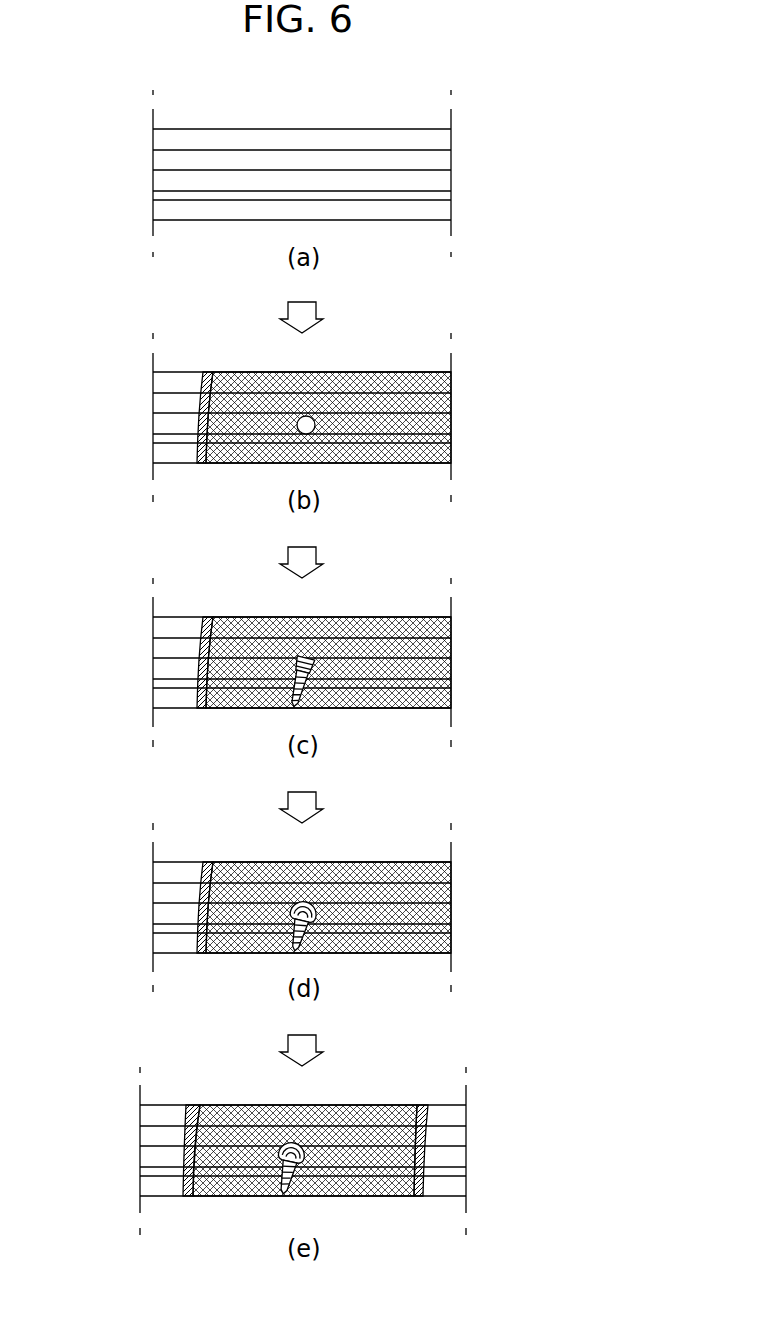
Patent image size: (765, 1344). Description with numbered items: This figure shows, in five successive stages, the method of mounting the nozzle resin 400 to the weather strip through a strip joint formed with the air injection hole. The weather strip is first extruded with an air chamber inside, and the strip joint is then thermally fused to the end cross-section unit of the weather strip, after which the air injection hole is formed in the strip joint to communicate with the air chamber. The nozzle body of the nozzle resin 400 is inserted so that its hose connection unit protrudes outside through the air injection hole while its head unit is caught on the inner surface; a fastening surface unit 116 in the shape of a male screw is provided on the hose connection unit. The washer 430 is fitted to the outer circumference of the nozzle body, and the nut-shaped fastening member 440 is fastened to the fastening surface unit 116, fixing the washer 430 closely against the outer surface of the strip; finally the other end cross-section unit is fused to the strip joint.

The screw head 116 is at (316, 660).
The nozzle resin 400 is at (262, 1190).
The washer 430 is at (320, 905).
The fastening member 440 is at (293, 910).